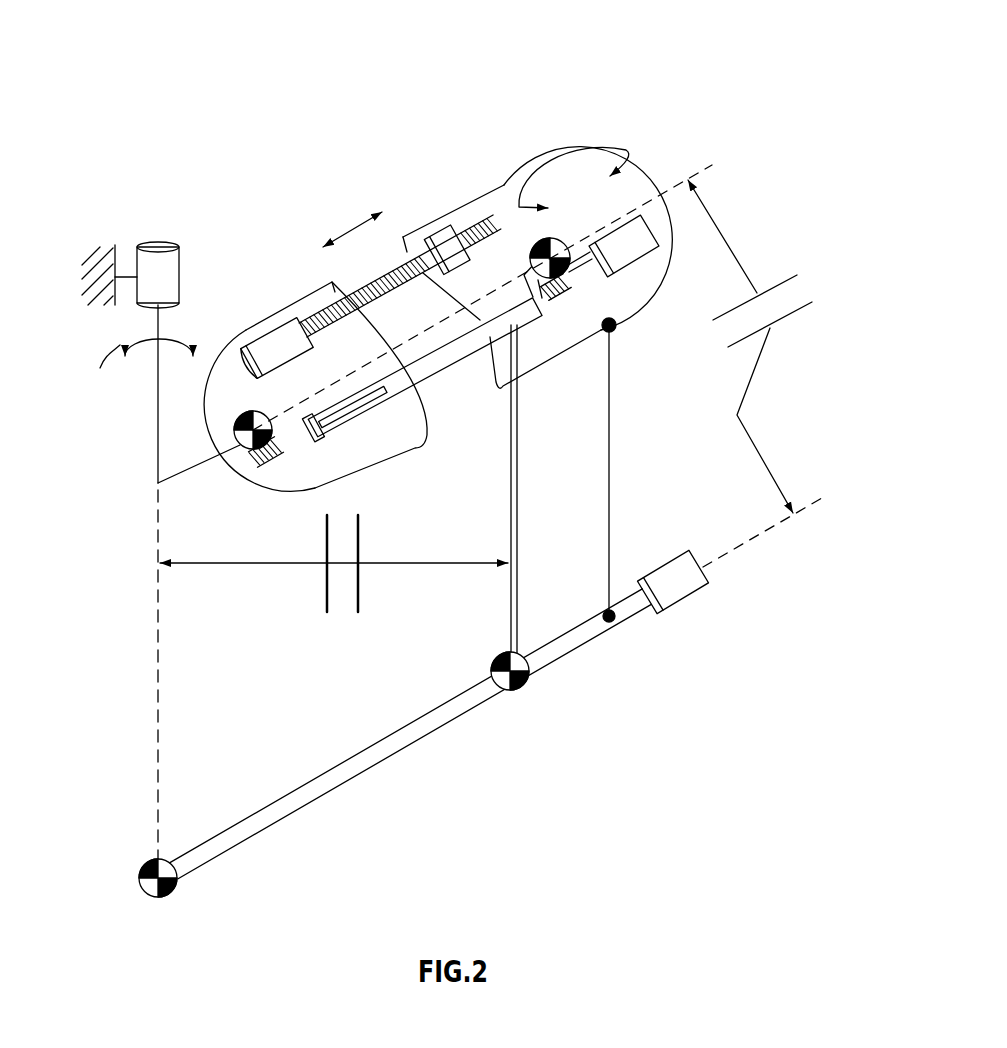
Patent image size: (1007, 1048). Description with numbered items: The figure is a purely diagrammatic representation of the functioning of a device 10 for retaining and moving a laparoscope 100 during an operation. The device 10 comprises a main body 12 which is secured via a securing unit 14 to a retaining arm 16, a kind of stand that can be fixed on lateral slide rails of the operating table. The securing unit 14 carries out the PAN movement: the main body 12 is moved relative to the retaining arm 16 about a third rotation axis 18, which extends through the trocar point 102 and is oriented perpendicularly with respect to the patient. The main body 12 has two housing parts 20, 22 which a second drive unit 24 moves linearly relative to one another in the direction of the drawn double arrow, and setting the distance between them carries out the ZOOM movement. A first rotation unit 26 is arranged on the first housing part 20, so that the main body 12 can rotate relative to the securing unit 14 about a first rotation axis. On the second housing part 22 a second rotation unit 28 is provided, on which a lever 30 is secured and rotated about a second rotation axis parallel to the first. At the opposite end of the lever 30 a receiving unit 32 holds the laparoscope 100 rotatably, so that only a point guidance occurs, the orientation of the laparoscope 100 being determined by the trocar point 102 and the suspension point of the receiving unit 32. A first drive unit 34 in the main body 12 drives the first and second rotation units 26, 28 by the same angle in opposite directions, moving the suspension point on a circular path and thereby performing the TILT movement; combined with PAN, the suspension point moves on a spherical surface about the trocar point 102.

The device 10 is at (614, 100).
The main body 12 is at (270, 143).
The securing unit 14 is at (140, 393).
The retaining arm 16 is at (88, 257).
The third rotation axis 18 is at (155, 718).
The first housing part 20 is at (250, 330).
The second housing part 22 is at (422, 226).
The second drive unit 24 is at (327, 195).
The first rotation unit 26 is at (245, 450).
The second rotation unit 28 is at (536, 250).
The lever 30 is at (508, 452).
The receiving unit 32 is at (528, 692).
The first drive unit 34 is at (668, 178).
The laparoscope 100 is at (568, 646).
The trocar point 102 is at (152, 897).